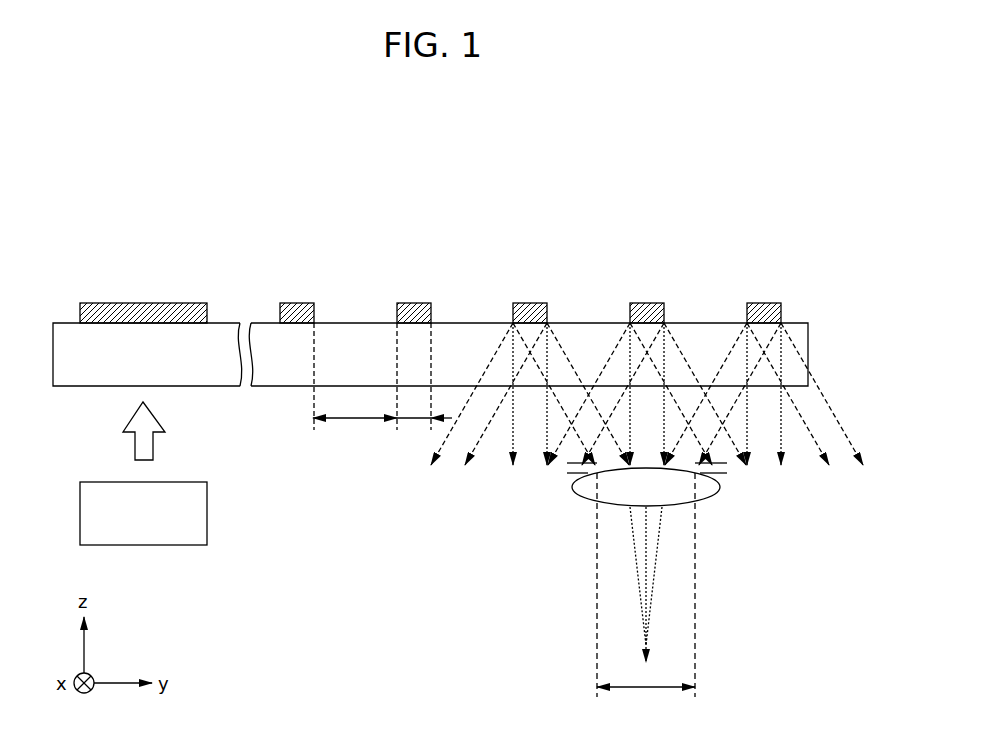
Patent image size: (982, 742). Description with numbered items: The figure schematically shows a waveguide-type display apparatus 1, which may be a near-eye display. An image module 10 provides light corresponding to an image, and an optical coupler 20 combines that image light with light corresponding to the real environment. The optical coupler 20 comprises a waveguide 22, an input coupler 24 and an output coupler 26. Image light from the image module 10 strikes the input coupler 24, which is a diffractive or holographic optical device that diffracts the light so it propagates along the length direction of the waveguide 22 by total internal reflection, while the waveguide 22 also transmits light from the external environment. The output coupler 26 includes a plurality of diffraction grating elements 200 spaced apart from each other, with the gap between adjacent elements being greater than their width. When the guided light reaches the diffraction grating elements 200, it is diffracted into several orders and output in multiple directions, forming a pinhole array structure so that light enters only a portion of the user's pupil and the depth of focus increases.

The waveguide-type display apparatus 1 is at (778, 218).
The image module 10 is at (197, 512).
The optical coupler 20 is at (540, 243).
The waveguide 22 is at (97, 340).
The input coupler 24 is at (147, 303).
The output coupler 26 is at (780, 288).
The diffraction grating elements 200 is at (779, 313).